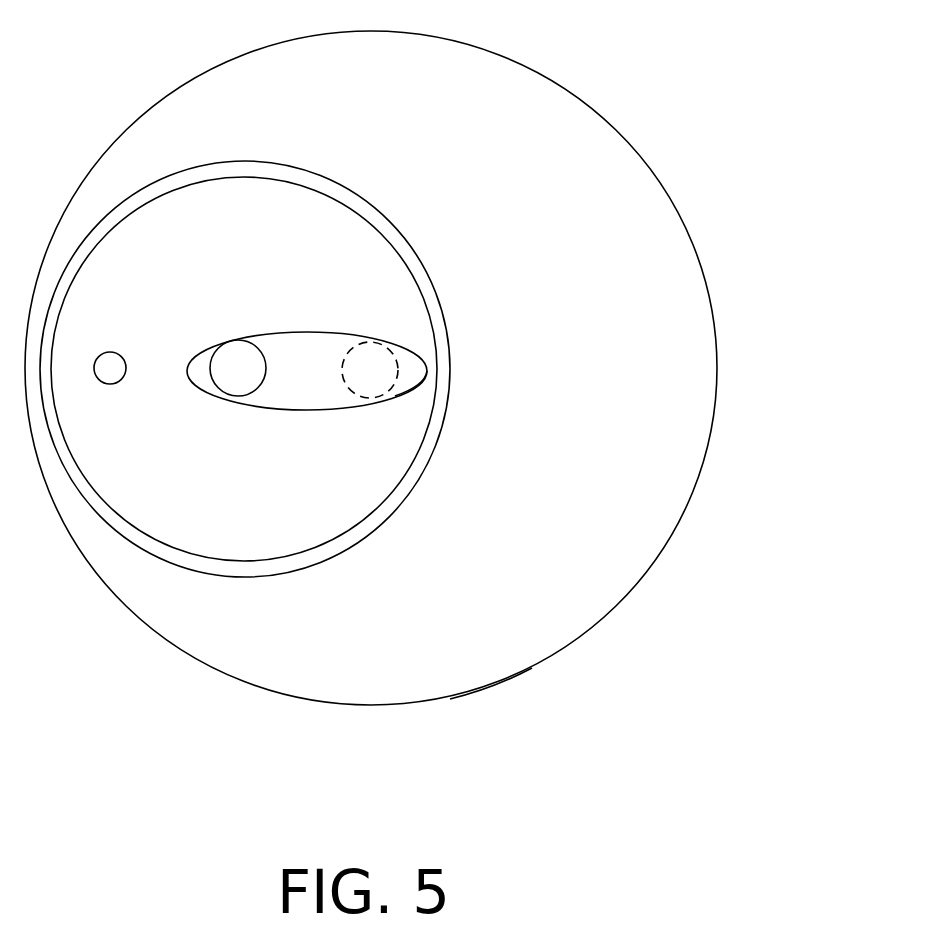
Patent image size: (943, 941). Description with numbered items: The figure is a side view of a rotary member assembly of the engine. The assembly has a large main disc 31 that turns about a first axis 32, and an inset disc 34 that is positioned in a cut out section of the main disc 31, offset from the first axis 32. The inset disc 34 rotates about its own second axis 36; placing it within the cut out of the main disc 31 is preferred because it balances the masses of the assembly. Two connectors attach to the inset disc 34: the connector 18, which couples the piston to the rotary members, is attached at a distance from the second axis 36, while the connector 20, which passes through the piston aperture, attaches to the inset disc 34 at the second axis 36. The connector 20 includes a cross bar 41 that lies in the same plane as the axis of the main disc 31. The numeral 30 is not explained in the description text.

The base plate 30 is at (680, 217).
The main disc 31 is at (532, 668).
The inset disc 34 is at (383, 227).
The connector 20 is at (308, 330).
The second axis 36 is at (258, 386).
The cross bar 41 is at (395, 352).
The first axis 32 is at (395, 396).
The connector 18 is at (115, 383).